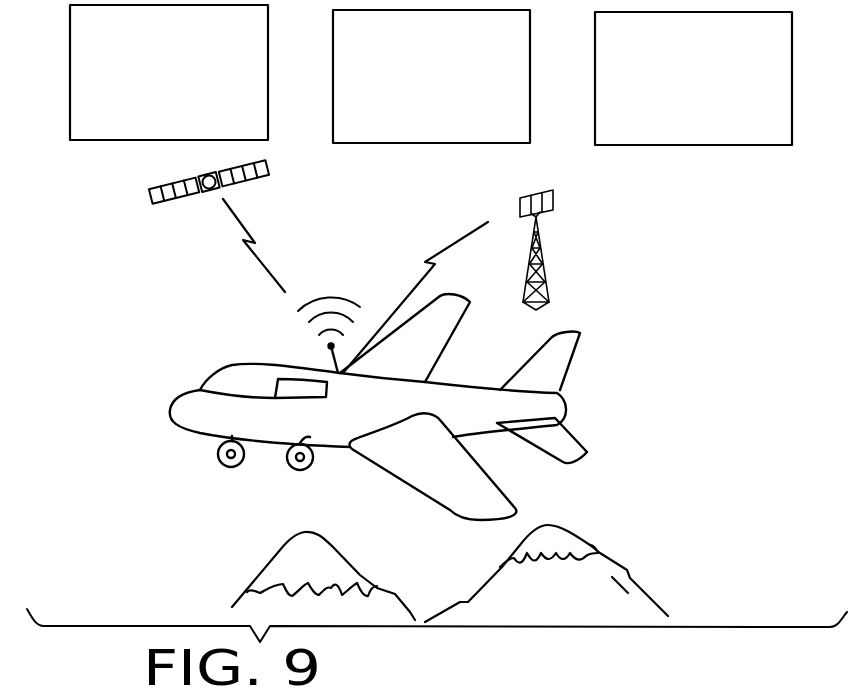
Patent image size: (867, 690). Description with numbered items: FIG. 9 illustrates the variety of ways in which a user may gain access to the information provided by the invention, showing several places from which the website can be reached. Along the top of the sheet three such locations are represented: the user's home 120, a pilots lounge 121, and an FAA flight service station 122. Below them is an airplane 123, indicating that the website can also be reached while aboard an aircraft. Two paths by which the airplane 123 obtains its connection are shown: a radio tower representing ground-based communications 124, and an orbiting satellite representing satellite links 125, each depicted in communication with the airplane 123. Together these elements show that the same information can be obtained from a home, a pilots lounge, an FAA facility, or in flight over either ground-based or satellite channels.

The user's home 120 is at (96, 142).
The pilots lounge 121 is at (425, 144).
The FAA flight service station 122 is at (690, 146).
The airplane 123 is at (168, 410).
The ground-based communications 124 is at (547, 255).
The satellite links 125 is at (176, 206).